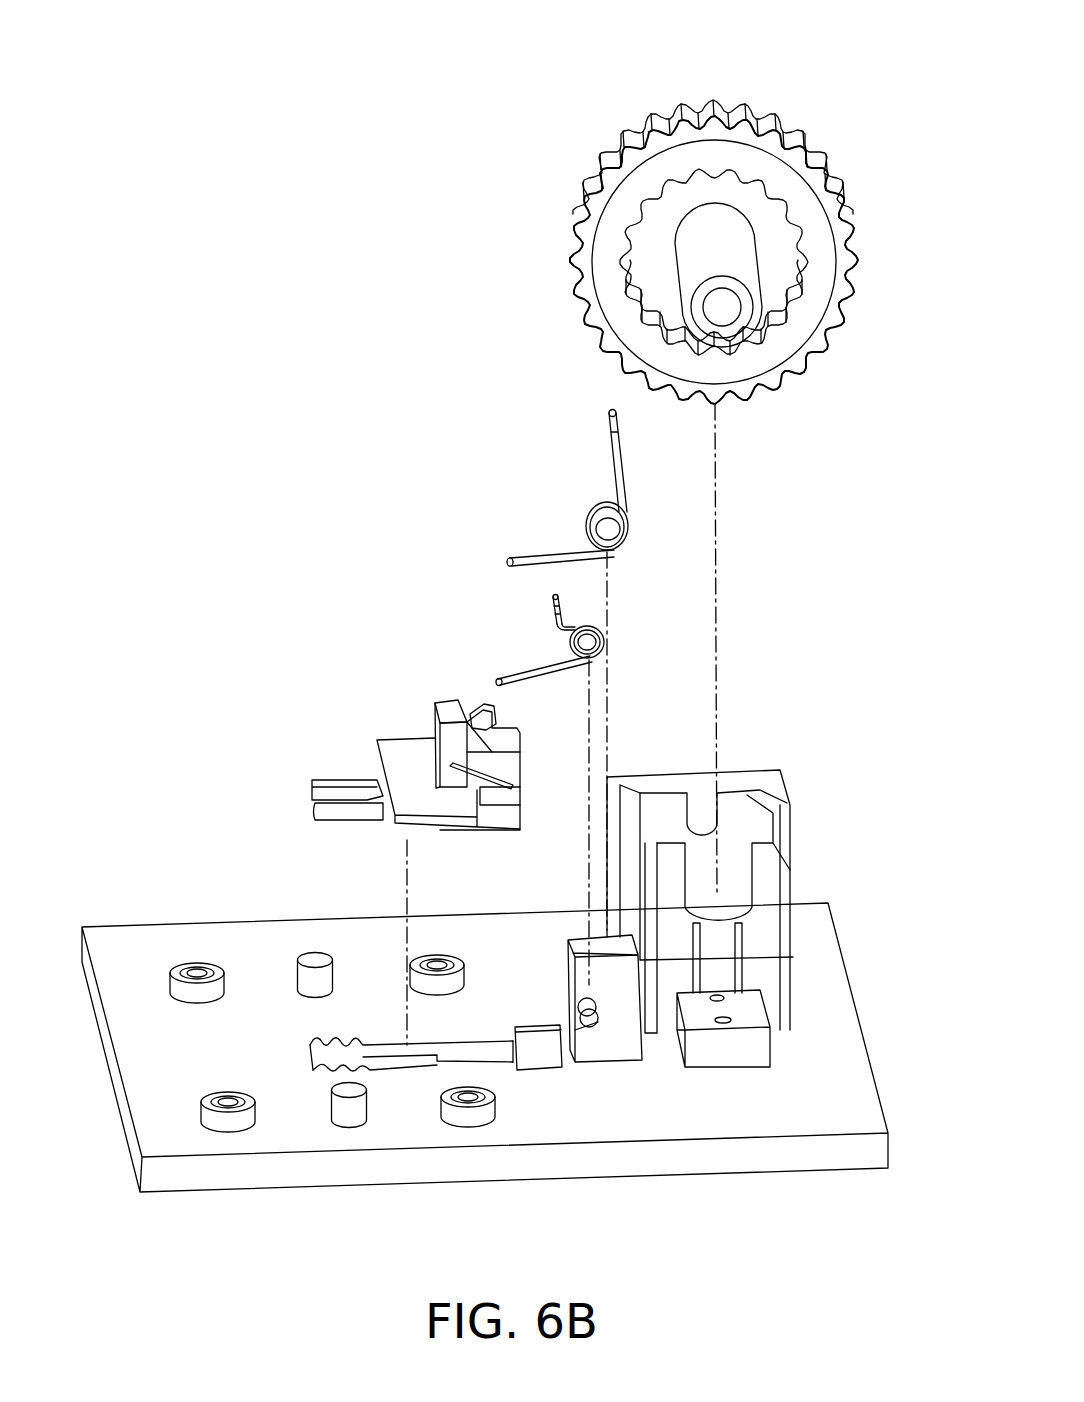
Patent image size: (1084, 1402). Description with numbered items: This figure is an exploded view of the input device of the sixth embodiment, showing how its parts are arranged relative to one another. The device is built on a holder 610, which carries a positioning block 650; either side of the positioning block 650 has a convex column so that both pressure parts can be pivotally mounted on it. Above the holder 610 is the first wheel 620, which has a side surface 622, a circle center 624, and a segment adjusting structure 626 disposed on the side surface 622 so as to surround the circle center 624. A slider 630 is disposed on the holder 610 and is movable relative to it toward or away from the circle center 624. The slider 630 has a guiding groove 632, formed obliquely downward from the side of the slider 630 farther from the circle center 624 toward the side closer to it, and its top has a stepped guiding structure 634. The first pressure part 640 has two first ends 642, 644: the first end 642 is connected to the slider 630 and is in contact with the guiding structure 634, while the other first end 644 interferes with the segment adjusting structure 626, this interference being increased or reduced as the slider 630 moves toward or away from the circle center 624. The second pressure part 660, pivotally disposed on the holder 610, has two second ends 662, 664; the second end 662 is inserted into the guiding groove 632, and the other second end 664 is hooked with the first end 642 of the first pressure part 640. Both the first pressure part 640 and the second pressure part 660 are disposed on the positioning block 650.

The holder 610 is at (715, 1115).
The first wheel 620 is at (436, 185).
The side surface 622 is at (621, 214).
The circle center 624 is at (722, 307).
The segment adjusting structure 626 is at (634, 240).
The slider 630 is at (398, 757).
The guiding groove 632 is at (490, 787).
The guiding structure 634 is at (482, 722).
The first pressure part 640 is at (420, 436).
The first end 642 is at (513, 550).
The first end 644 is at (606, 421).
The positioning block 650 is at (613, 1007).
The second pressure part 660 is at (411, 566).
The second end 662 is at (515, 672).
The second end 664 is at (553, 607).